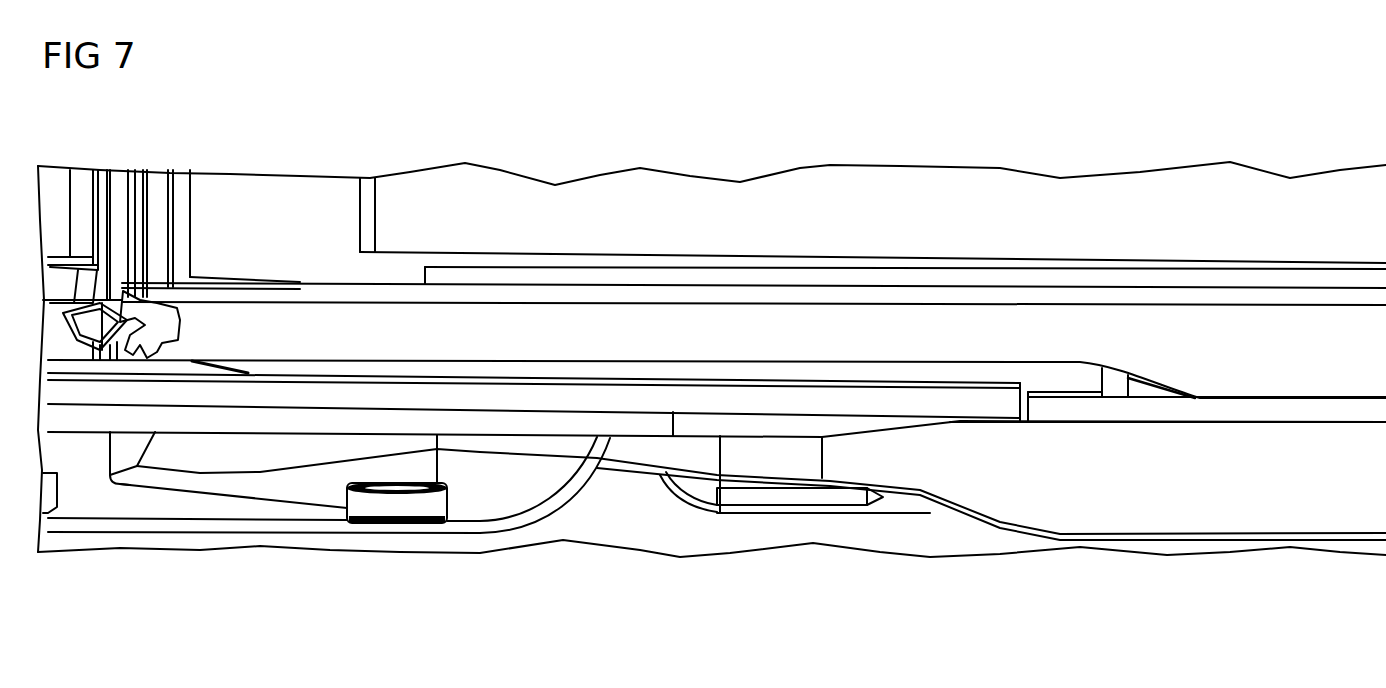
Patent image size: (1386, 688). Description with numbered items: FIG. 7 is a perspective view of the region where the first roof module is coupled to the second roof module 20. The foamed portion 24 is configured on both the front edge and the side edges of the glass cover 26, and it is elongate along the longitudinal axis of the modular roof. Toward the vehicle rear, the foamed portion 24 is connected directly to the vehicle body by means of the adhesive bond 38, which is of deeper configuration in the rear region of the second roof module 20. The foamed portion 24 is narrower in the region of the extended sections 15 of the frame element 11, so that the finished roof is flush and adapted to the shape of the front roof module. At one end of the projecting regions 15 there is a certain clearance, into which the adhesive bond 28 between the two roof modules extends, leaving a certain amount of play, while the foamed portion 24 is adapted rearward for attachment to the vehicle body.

The second roof module 20 is at (993, 122).
The foamed portion 24 is at (280, 200).
The glass cover 26 is at (817, 187).
The adhesive bond 28 is at (487, 370).
The adhesive bond 38 is at (313, 420).
The frame element 11 is at (140, 390).
The projecting regions 15 is at (735, 425).